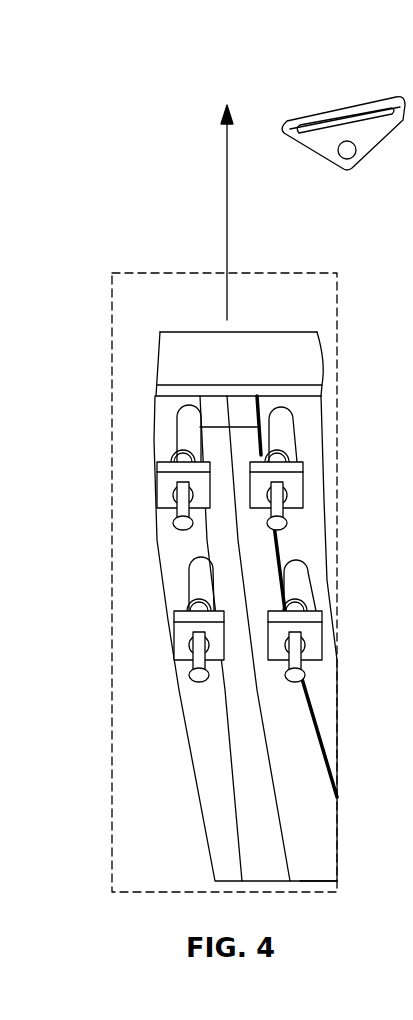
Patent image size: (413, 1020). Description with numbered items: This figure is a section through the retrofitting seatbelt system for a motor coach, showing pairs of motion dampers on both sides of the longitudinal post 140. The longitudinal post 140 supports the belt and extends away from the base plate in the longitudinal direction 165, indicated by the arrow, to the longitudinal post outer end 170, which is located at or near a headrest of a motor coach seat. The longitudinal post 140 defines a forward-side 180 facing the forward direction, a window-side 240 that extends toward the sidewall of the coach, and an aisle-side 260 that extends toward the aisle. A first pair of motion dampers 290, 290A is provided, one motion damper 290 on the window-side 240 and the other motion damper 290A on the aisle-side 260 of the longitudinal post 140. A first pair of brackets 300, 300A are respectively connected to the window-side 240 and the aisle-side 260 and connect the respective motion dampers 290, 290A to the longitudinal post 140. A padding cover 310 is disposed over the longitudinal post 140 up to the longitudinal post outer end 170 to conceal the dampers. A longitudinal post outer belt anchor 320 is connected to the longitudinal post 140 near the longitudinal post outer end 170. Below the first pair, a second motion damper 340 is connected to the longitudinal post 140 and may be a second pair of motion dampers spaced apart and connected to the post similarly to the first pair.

The longitudinal post 140 is at (233, 785).
The longitudinal direction 165 is at (227, 200).
The longitudinal post outer end 170 is at (192, 385).
The forward-side 180 is at (318, 857).
The window-side 240 is at (218, 733).
The aisle-side 260 is at (305, 744).
The motion damper 290 is at (292, 505).
The motion damper 290A is at (165, 500).
The bracket 300 is at (292, 470).
The bracket 300A is at (160, 460).
The padding cover 310 is at (304, 358).
The longitudinal post outer belt anchor 320 is at (340, 102).
The second motion damper 340 is at (313, 635).